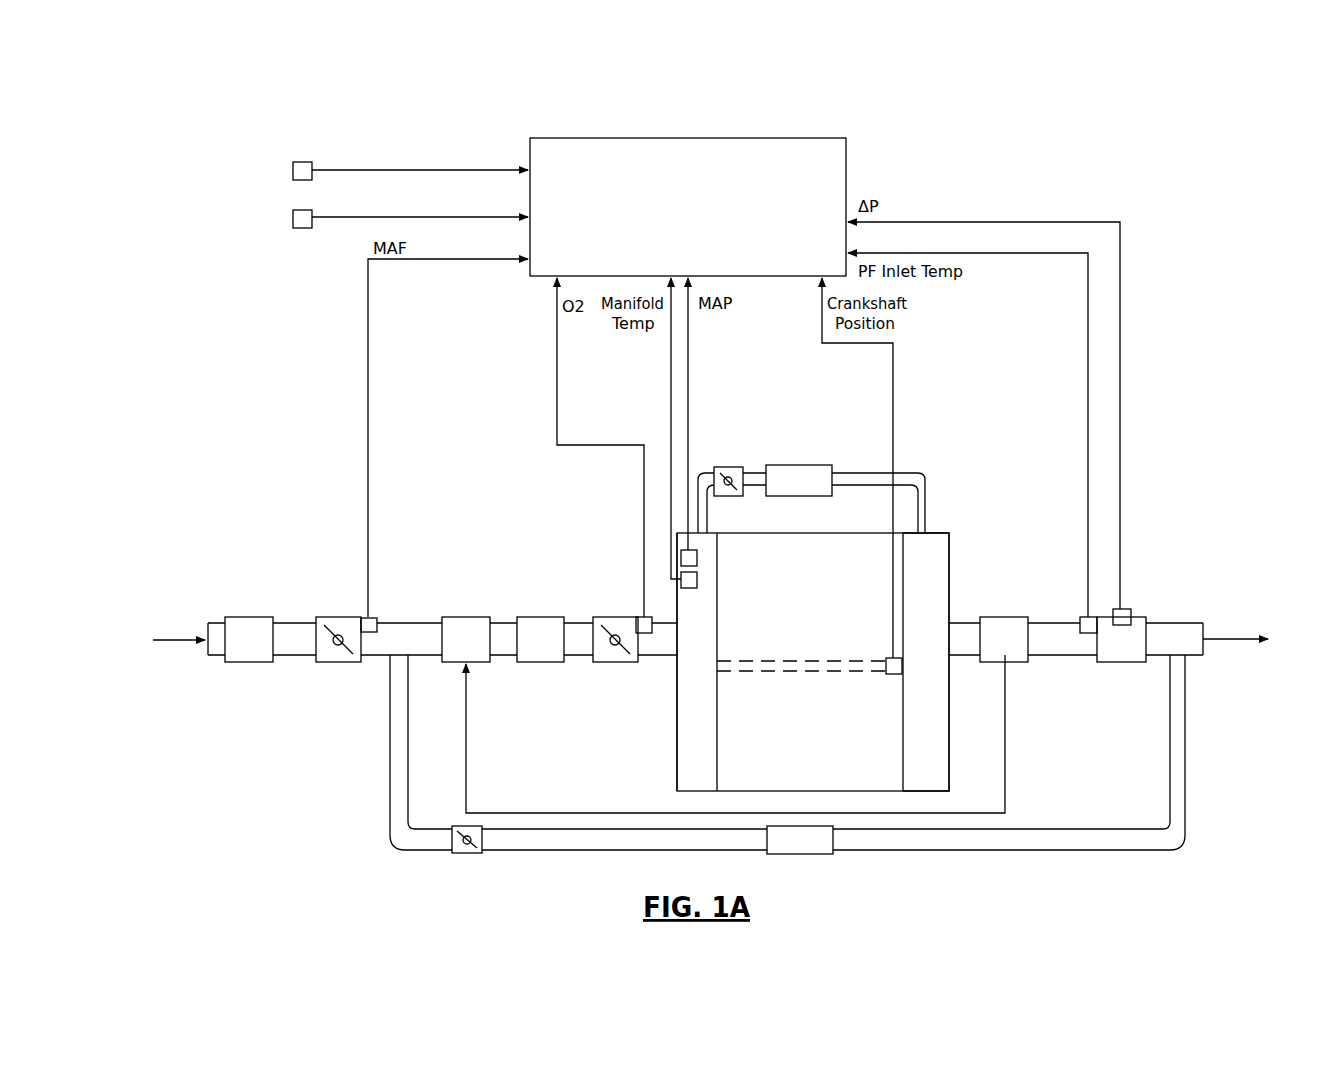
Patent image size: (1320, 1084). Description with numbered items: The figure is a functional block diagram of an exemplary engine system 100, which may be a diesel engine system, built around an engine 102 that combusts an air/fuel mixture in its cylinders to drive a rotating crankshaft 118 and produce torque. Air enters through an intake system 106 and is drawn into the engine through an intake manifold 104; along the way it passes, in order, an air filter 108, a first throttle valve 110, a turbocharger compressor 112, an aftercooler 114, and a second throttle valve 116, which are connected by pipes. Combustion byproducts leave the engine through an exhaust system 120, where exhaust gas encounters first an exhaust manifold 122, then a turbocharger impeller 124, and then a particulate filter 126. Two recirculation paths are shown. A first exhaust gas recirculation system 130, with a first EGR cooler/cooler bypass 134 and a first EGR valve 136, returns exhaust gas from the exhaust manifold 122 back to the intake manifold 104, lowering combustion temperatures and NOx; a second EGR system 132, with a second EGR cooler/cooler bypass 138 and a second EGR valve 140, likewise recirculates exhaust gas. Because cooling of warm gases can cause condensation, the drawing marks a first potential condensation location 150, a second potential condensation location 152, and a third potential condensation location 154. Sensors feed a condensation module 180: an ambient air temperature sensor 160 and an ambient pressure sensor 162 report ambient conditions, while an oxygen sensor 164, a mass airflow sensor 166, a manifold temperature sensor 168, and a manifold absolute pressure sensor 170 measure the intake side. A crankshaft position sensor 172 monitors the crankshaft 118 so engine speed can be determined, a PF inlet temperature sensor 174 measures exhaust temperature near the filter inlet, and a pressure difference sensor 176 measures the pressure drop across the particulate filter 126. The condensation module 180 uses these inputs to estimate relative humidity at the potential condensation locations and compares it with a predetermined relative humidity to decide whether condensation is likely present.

The engine system 100 is at (199, 150).
The engine 102 is at (843, 533).
The intake manifold 104 is at (677, 767).
The intake system 106 is at (269, 565).
The air filter 108 is at (250, 662).
The first throttle valve 110 is at (334, 662).
The turbocharger compressor 112 is at (452, 617).
The aftercooler 114 is at (545, 662).
The second throttle valve 116 is at (622, 662).
The crankshaft 118 is at (762, 661).
The exhaust system 120 is at (1214, 557).
The exhaust manifold 122 is at (950, 565).
The turbocharger impeller 124 is at (996, 617).
The particulate filter 126 is at (1124, 662).
The first exhaust gas recirculation system 130 is at (914, 463).
The second EGR system 132 is at (1007, 872).
The first EGR cooler/cooler bypass 134 is at (800, 465).
The first EGR valve 136 is at (729, 467).
The second EGR cooler/cooler bypass 138 is at (800, 854).
The second EGR valve 140 is at (467, 853).
The first potential condensation location 150 is at (531, 839).
The second potential condensation location 152 is at (431, 635).
The third potential condensation location 154 is at (556, 637).
The ambient air temperature sensor 160 is at (294, 211).
The ambient pressure sensor 162 is at (294, 163).
The oxygen sensor 164 is at (642, 617).
The mass airflow sensor 166 is at (366, 617).
The manifold temperature sensor 168 is at (697, 580).
The manifold absolute pressure sensor 170 is at (697, 557).
The crankshaft position sensor 172 is at (893, 674).
The PF inlet temperature sensor 174 is at (1086, 617).
The pressure difference sensor 176 is at (1124, 609).
The condensation module 180 is at (685, 138).